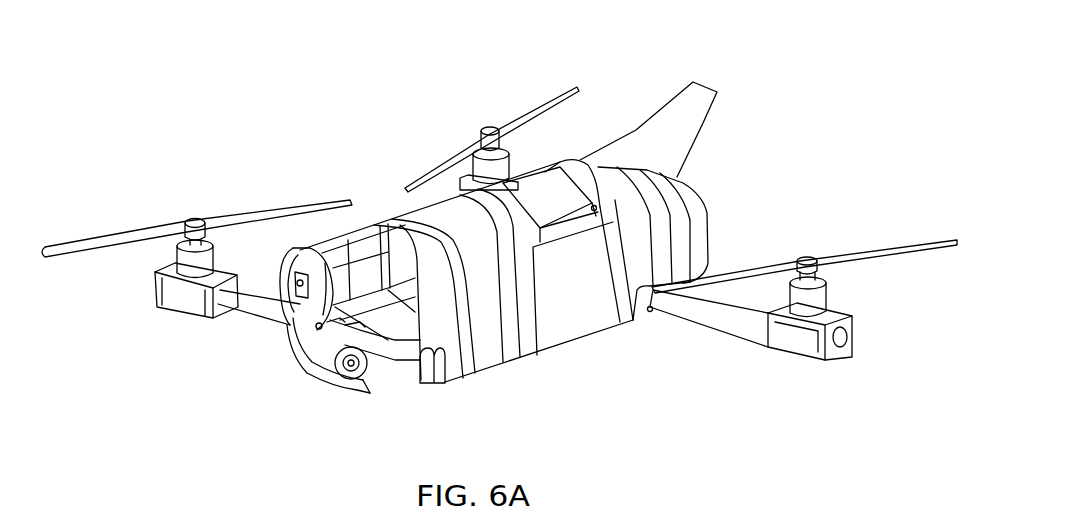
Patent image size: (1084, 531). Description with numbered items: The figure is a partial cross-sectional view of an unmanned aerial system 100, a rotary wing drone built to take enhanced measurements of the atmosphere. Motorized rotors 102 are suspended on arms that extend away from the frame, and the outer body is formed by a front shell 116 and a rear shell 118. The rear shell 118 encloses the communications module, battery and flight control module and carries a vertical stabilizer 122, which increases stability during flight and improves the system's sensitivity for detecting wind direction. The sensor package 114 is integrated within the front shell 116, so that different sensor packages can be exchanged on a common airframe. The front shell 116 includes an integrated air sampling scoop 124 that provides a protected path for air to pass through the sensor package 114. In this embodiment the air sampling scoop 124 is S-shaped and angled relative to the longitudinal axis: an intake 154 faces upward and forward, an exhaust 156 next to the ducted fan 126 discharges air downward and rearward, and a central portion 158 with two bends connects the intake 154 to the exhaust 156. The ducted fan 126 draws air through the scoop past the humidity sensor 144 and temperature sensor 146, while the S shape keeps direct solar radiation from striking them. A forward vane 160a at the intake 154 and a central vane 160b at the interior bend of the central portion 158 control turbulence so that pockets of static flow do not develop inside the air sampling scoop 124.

The unmanned aerial system 100 is at (449, 90).
The motorized rotor 102 is at (804, 266).
The sensor package 114 is at (328, 170).
The front shell 116 is at (440, 200).
The rear shell 118 is at (600, 313).
The vertical stabilizer 122 is at (697, 128).
The air sampling scoop 124 is at (278, 377).
The ducted fan 126 is at (377, 373).
The humidity sensor 144 is at (348, 329).
The temperature sensor 146 is at (331, 327).
The intake 154 is at (307, 293).
The exhaust 156 is at (320, 375).
The central portion 158 is at (303, 305).
The forward vane 160a is at (297, 281).
The central vane 160b is at (317, 327).